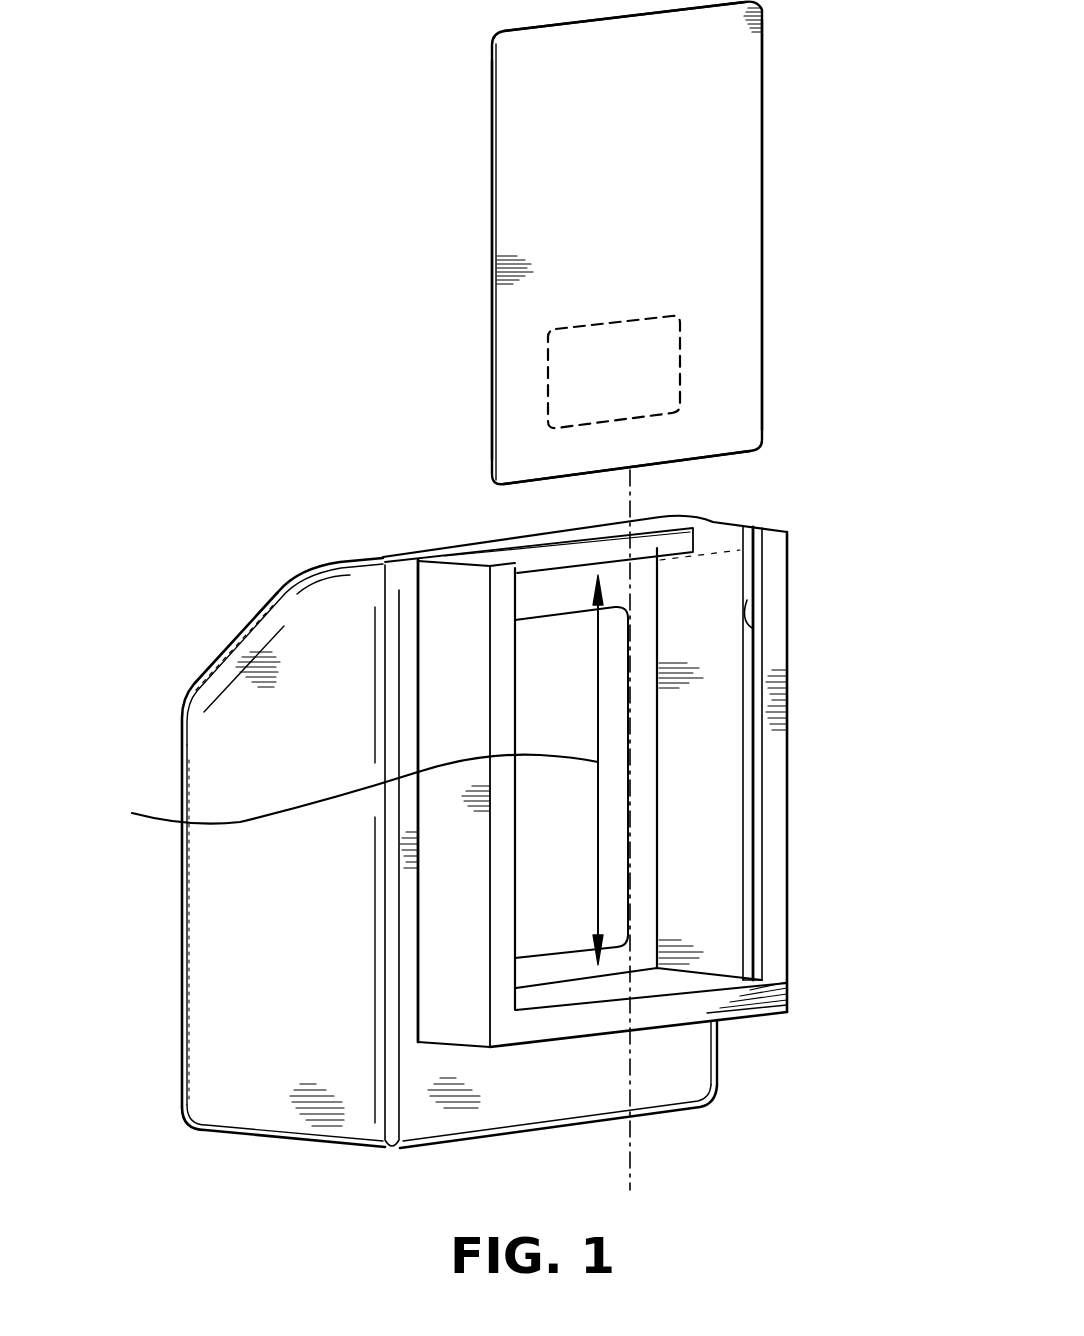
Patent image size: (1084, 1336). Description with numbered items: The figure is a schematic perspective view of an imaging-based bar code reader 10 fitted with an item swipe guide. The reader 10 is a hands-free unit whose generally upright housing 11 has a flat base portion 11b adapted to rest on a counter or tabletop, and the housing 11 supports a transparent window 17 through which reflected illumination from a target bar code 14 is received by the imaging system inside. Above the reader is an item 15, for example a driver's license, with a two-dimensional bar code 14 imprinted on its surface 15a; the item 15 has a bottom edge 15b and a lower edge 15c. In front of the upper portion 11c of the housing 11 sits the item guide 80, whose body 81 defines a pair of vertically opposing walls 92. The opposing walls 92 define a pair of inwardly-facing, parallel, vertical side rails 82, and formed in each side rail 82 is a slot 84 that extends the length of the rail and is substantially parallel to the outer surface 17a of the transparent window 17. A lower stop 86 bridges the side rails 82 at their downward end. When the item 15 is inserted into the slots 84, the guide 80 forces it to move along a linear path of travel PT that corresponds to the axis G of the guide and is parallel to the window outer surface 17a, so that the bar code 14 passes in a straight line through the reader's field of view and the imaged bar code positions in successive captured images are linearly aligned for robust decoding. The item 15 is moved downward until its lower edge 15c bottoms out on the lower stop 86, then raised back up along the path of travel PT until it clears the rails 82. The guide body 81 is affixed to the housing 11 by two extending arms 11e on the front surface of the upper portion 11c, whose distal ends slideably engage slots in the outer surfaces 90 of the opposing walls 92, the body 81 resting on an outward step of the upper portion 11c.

The imaging-based bar code reader 10 is at (205, 600).
The housing 11 is at (160, 922).
The flat base portion 11b is at (310, 1142).
The upper portion 11c is at (253, 747).
The extending arms 11e is at (408, 963).
The target bar code 14 is at (622, 360).
The item 15 is at (792, 170).
The surface of the item 15a is at (492, 75).
The bottom edge 15b is at (763, 72).
The lower edge 15c is at (700, 455).
The transparent window 17 is at (650, 766).
The window outer surface 17a is at (670, 722).
The item guide 80 is at (815, 647).
The guide body 81 is at (762, 1028).
The side rails 82 is at (758, 775).
The slot 84 is at (752, 628).
The lower stop 86 is at (672, 985).
The outer surfaces 90 is at (455, 975).
The opposing walls 92 is at (777, 893).
The path of travel PT is at (346, 792).
The axis of movement G is at (630, 1175).